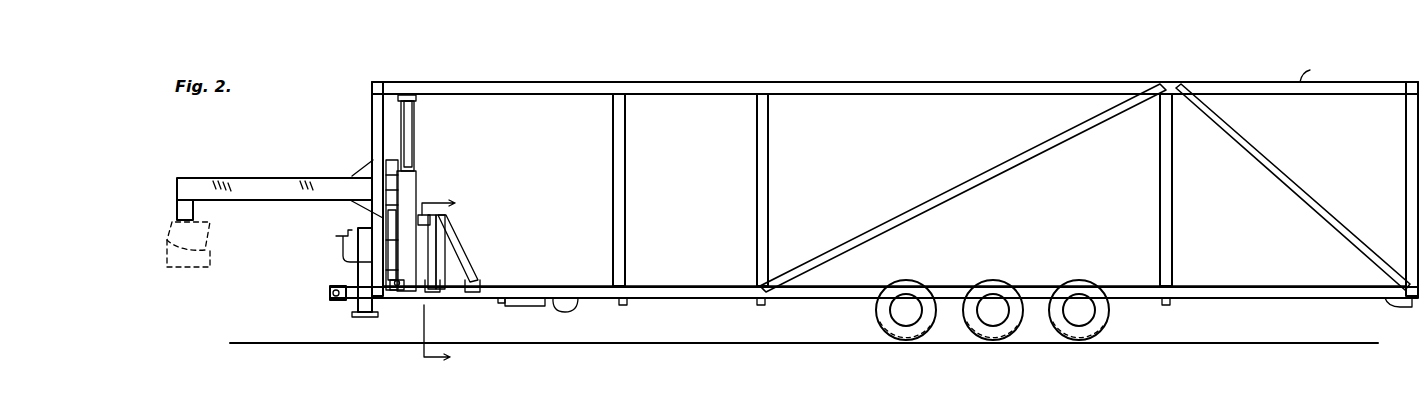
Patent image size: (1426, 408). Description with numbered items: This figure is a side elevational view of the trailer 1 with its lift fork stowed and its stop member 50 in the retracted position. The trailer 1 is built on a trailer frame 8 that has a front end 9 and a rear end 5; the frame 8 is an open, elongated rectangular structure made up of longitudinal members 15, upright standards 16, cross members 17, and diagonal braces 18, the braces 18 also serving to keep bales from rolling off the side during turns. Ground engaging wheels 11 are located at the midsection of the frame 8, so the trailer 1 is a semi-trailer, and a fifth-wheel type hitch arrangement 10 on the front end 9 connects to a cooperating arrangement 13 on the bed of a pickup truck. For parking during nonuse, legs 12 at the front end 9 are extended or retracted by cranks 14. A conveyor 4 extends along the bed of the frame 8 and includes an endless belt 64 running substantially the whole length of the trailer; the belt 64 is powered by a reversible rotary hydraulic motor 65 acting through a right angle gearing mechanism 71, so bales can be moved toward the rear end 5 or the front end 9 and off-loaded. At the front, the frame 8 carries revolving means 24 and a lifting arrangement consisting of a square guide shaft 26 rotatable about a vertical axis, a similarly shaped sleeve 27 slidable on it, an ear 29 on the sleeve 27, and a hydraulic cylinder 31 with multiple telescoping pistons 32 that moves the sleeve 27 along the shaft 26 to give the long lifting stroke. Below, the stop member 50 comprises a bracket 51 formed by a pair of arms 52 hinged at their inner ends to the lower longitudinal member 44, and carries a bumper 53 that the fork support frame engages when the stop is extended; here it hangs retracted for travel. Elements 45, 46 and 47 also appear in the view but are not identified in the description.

The trailer 1 is at (951, 52).
The conveyor 4 is at (325, 300).
The rear end 5 is at (1410, 80).
The trailer frame 8 is at (822, 73).
The front end 9 is at (392, 80).
The hitch arrangement 10 is at (254, 178).
The ground engaging wheels 11 is at (878, 318).
The legs 12 is at (362, 314).
The cooperating arrangement 13 is at (167, 250).
The cranks 14 is at (343, 254).
The longitudinal members 15 is at (877, 210).
The standards 16 is at (622, 186).
The cross members 17 is at (626, 306).
The braces 18 is at (996, 172).
The revolving means 24 is at (402, 300).
The guide shaft 26 is at (414, 150).
The sleeve 27 is at (418, 182).
The ear 29 is at (394, 172).
The hydraulic cylinder 31 is at (396, 224).
The telescoping pistons 32 is at (350, 176).
The lower longitudinal member 44 is at (590, 262).
The cap 45 is at (416, 98).
The top rail 46 is at (548, 82).
The piston rod 47 is at (408, 102).
The stop member 50 is at (468, 249).
The bracket 51 is at (468, 270).
The arms 52 is at (434, 258).
The bumper 53 is at (436, 234).
The endless belt 64 is at (736, 286).
The motor 65 is at (516, 306).
The right angle gearing mechanism 71 is at (572, 310).